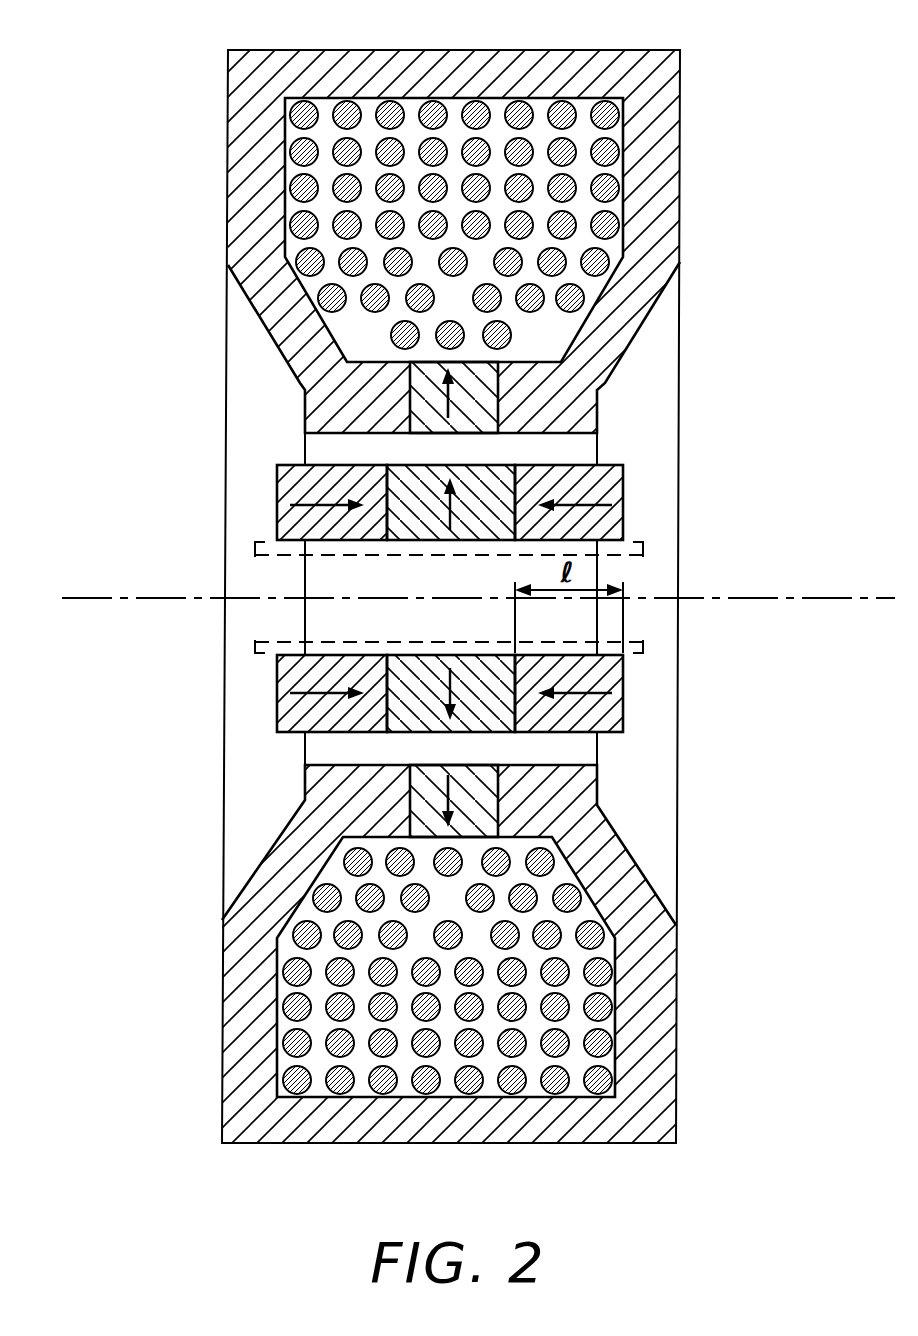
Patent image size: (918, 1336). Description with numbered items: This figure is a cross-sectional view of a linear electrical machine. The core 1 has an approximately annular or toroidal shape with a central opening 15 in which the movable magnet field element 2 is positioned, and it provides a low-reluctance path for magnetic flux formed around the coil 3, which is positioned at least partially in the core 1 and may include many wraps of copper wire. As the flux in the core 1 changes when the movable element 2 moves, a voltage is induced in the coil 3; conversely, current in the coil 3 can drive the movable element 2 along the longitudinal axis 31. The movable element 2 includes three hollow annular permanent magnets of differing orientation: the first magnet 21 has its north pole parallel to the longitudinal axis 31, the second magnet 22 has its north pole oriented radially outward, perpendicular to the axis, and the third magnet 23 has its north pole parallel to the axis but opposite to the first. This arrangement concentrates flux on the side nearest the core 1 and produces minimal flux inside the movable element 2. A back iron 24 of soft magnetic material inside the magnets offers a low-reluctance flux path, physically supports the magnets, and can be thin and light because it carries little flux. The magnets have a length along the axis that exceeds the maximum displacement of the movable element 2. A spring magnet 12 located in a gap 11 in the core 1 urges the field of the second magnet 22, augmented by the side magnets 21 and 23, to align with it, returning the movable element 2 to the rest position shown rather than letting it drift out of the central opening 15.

The core 1 is at (685, 51).
The movable magnet field element 2 is at (623, 712).
The coil 3 is at (633, 997).
The gap 11 is at (500, 802).
The spring magnet 12 is at (437, 408).
The central opening 15 is at (567, 765).
The first magnet 21 is at (278, 465).
The second magnet 22 is at (500, 465).
The third magnet 23 is at (627, 465).
The back iron 24 is at (255, 653).
The longitudinal axis 31 is at (757, 597).